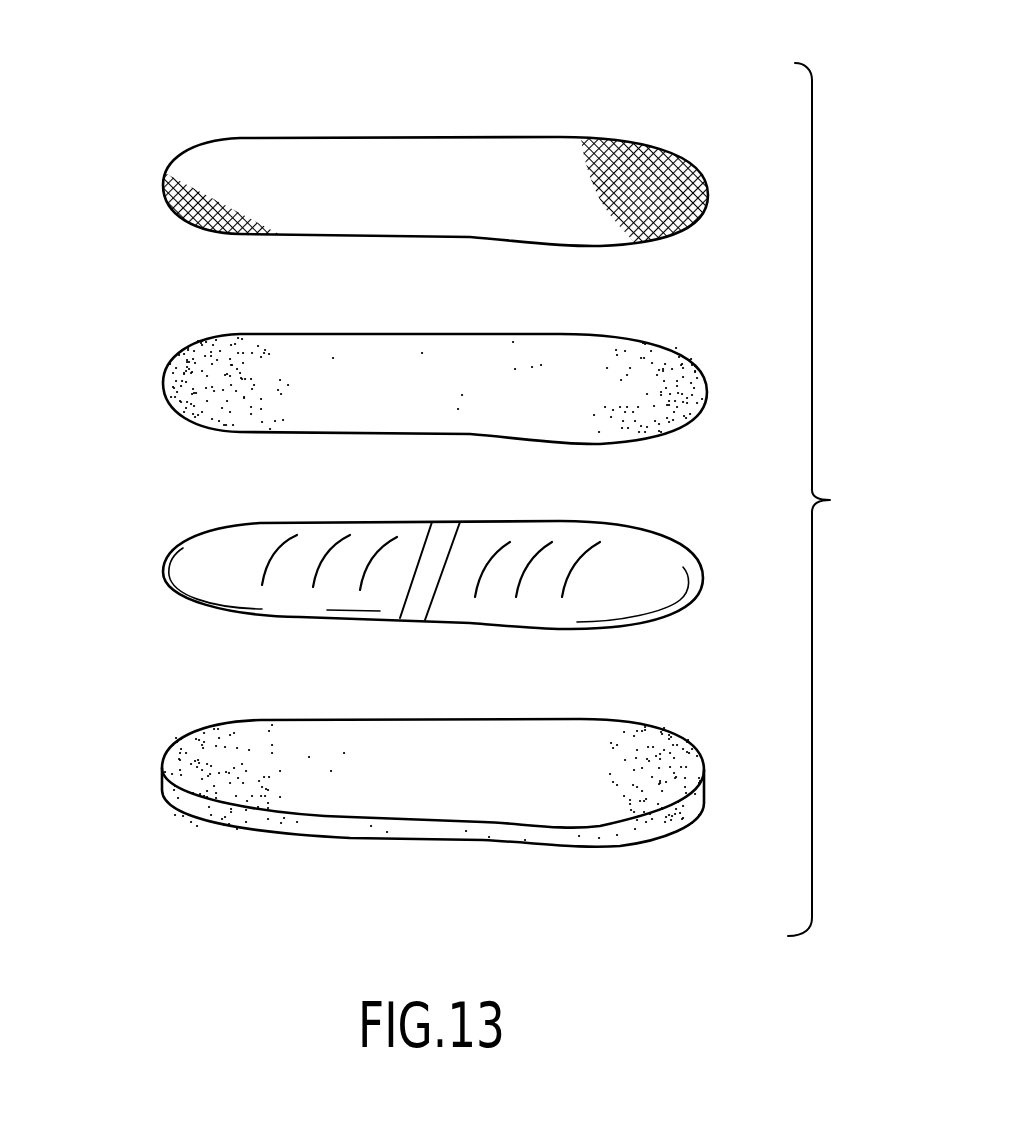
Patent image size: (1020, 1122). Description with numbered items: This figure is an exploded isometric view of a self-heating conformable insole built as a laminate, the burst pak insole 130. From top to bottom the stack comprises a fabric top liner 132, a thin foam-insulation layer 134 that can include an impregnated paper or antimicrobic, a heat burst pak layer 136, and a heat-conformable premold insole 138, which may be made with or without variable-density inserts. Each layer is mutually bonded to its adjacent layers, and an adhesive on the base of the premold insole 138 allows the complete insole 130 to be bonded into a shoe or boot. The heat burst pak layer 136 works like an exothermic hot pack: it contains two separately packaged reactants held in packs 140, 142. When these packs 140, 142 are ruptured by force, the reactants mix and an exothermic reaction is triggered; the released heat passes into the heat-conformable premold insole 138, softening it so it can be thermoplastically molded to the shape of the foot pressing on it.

The burst pak insole 130 is at (839, 499).
The fabric top liner 132 is at (508, 150).
The thin foam-insulation layer 134 is at (448, 333).
The heat burst pak layer 136 is at (390, 552).
The heat-conformable premold insole 138 is at (308, 797).
The pack 140 is at (192, 598).
The pack 142 is at (648, 553).